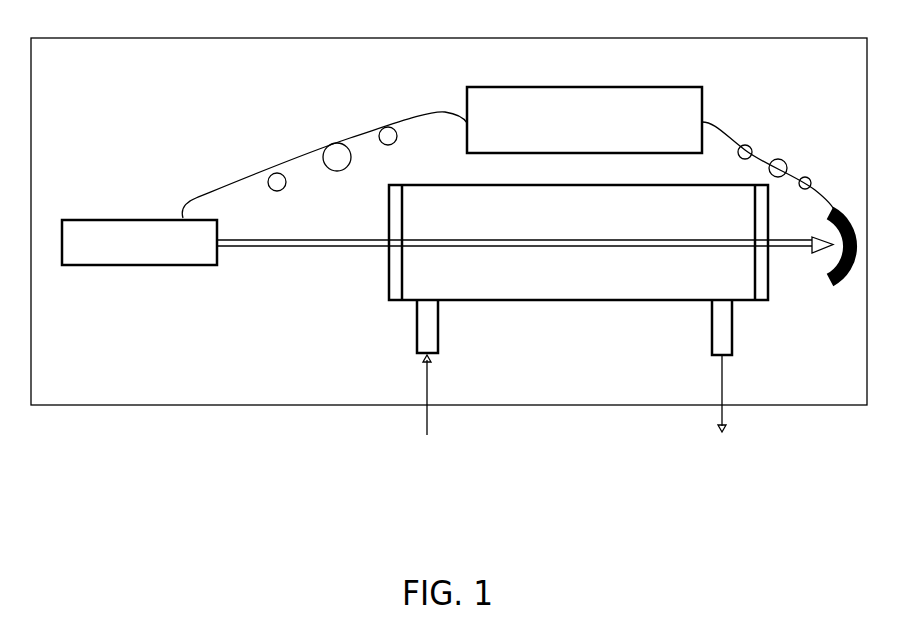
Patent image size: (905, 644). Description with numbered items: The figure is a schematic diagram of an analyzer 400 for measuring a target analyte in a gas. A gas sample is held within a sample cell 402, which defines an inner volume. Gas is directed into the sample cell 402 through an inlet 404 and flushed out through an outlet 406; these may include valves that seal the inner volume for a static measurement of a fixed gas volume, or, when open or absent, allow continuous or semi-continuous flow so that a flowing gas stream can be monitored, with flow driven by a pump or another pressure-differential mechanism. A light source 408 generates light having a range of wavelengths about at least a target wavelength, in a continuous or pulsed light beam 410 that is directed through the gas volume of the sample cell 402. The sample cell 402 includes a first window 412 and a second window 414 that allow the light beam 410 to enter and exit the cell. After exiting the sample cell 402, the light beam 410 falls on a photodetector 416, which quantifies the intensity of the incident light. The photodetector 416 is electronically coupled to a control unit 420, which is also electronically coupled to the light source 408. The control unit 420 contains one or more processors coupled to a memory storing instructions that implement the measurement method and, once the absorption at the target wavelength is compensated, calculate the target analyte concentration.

The analyzer 400 is at (88, 75).
The sample cell 402 is at (552, 277).
The inlet 404 is at (432, 342).
The outlet 406 is at (717, 338).
The light source 408 is at (103, 230).
The light beam 410 is at (297, 250).
The window 412 is at (390, 292).
The window 414 is at (763, 292).
The photodetector 416 is at (825, 282).
The control unit 420 is at (584, 120).